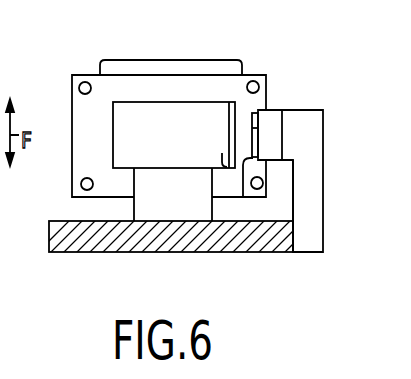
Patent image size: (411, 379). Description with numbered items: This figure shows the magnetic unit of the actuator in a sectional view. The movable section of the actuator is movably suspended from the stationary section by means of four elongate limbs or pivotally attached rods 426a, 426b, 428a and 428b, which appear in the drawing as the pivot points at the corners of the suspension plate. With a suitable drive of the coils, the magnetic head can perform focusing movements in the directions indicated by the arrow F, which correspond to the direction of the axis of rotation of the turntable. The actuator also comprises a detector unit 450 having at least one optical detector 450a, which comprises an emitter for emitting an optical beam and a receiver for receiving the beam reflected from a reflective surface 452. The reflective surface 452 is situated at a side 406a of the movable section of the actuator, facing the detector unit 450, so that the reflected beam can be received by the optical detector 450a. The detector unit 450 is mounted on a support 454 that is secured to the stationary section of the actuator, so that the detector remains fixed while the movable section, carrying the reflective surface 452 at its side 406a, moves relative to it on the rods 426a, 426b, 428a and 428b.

The pivotally attached rod 428a is at (85, 82).
The pivotally attached rod 428b is at (80, 187).
The pivotally attached rod 426a is at (253, 81).
The pivotally attached rod 426b is at (258, 190).
The side of the movable section 406a is at (215, 170).
The reflective surface 452 is at (232, 108).
The detector unit 450 is at (268, 128).
The optical detector 450a is at (244, 197).
The support 454 is at (312, 183).